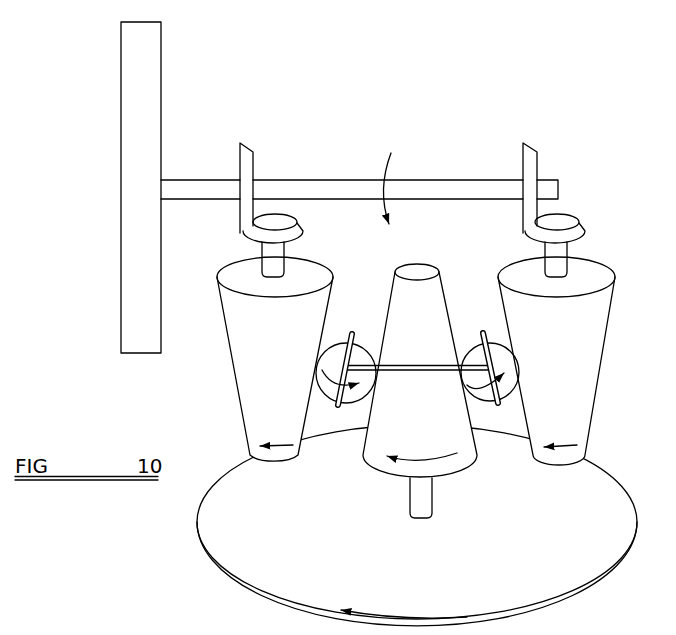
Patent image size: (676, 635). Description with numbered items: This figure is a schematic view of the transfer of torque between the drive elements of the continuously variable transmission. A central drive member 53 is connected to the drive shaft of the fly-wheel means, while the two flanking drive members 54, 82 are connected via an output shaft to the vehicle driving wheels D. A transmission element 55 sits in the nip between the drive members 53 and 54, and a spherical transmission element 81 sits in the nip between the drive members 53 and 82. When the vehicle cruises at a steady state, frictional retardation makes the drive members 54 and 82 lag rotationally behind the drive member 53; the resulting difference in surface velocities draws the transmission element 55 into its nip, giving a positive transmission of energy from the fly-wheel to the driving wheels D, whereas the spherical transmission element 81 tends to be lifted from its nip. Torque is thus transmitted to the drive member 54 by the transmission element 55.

The vehicle driving wheels D is at (121, 333).
The drive member 53 is at (443, 286).
The drive member 54 is at (602, 354).
The drive member 82 is at (231, 343).
The spherical transmission element 81 is at (323, 404).
The transmission element 55 is at (515, 399).